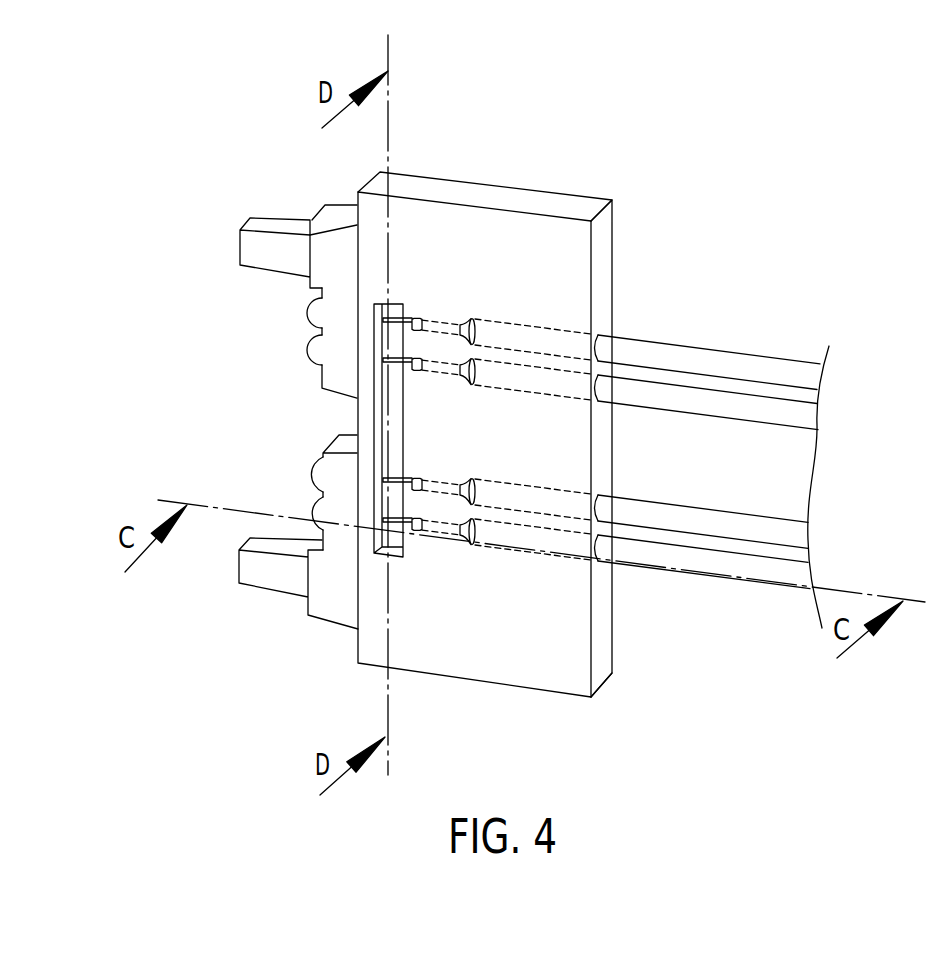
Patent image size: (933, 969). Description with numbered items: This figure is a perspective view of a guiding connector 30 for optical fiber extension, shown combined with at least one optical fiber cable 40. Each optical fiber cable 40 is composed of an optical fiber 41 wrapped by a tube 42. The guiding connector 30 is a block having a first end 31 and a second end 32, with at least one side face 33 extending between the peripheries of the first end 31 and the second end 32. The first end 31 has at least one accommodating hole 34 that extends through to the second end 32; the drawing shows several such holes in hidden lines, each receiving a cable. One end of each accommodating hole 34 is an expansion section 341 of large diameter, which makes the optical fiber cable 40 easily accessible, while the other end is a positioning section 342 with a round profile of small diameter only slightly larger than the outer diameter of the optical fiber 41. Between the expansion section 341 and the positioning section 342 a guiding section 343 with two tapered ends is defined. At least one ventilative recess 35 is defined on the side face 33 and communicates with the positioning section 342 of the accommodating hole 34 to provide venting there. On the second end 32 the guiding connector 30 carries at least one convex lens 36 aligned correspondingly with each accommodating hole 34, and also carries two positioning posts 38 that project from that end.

The guiding connector 30 is at (467, 159).
The first end 31 is at (602, 310).
The second end 32 is at (337, 365).
The side face 33 is at (416, 222).
The accommodating hole 34 is at (598, 352).
The ventilative recess 35 is at (375, 540).
The convex lens 36 is at (315, 353).
The positioning posts 38 is at (277, 225).
The optical fiber cable 40 is at (804, 342).
The optical fiber 41 is at (448, 558).
The tube 42 is at (728, 367).
The expansion section 341 is at (542, 332).
The positioning section 342 is at (397, 523).
The guiding section 343 is at (438, 318).